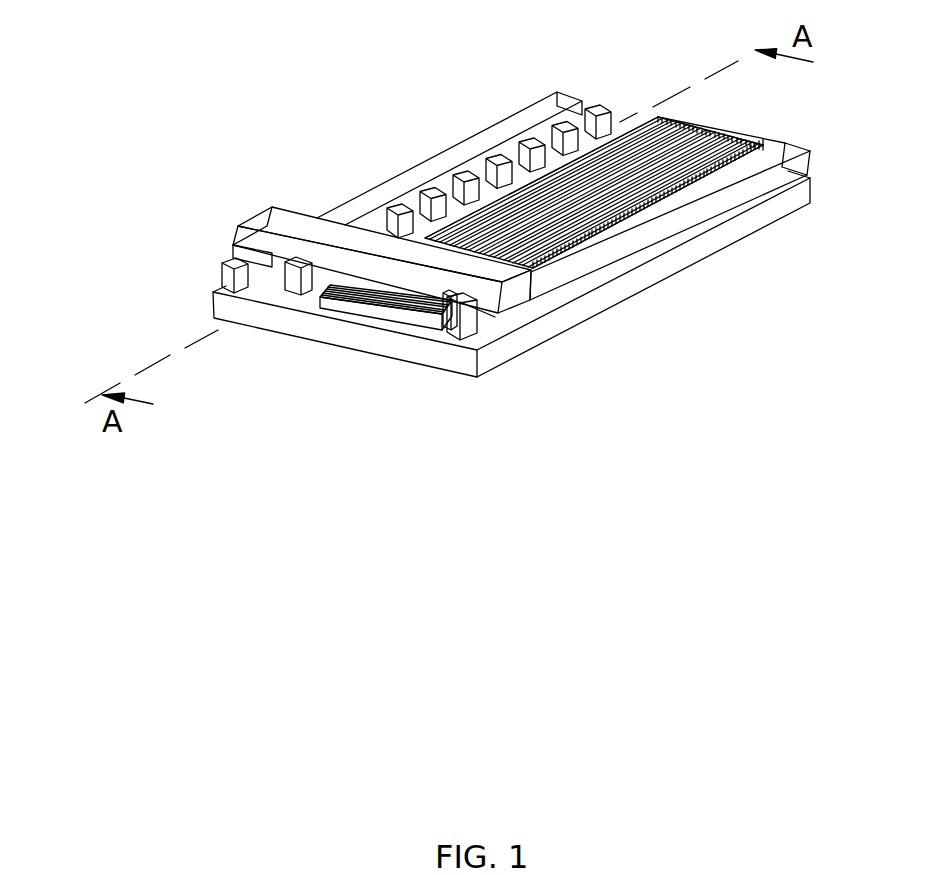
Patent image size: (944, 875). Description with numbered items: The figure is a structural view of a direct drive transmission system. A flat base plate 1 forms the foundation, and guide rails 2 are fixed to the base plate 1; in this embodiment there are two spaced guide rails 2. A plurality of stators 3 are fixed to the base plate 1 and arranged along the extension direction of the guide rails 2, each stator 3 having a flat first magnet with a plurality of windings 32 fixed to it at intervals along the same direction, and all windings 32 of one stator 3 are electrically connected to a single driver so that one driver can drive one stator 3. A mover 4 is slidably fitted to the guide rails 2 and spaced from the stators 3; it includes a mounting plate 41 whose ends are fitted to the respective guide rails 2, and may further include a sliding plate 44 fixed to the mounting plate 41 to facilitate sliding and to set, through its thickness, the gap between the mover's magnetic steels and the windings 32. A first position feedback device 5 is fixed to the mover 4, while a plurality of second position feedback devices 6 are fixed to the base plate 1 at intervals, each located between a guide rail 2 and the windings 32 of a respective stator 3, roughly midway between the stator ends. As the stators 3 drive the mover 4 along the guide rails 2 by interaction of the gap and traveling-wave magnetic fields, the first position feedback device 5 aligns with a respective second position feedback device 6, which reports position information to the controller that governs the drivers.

The base plate 1 is at (644, 277).
The guide rails 2 is at (233, 276).
The stators 3 is at (700, 124).
The windings 32 is at (362, 302).
The mover 4 is at (418, 288).
The mounting plate 41 is at (266, 213).
The sliding plate 44 is at (530, 302).
The first position feedback device 5 is at (306, 254).
The second position feedback devices 6 is at (466, 175).